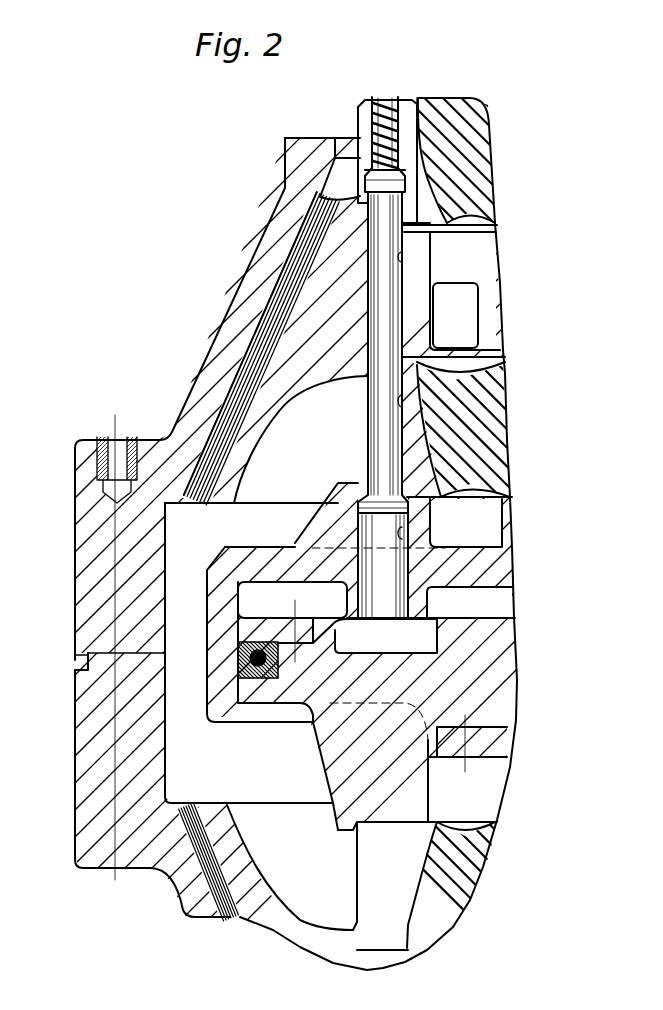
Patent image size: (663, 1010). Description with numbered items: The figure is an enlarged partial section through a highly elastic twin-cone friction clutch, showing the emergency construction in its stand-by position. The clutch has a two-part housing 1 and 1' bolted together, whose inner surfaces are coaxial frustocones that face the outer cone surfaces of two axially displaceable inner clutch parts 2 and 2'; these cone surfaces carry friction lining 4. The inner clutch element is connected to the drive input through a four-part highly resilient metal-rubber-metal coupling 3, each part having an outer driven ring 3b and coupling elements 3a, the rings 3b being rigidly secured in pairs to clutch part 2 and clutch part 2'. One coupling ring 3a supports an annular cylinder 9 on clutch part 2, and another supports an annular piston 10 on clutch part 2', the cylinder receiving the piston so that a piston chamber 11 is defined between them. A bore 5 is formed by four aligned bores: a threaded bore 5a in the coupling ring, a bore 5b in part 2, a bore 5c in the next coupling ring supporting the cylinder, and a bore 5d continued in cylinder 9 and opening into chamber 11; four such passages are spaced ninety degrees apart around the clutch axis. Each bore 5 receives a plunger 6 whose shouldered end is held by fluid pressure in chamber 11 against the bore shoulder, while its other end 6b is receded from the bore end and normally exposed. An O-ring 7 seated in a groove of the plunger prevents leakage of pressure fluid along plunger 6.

The housing part 1 is at (199, 512).
The housing part 1' is at (107, 804).
The clutch part 2 is at (259, 348).
The clutch part 2' is at (215, 898).
The metal-rubber-metal coupling 3 is at (440, 98).
The coupling element 3a is at (423, 200).
The outer driven ring 3b is at (463, 181).
The friction lining 4 is at (308, 227).
The bore 5 is at (404, 323).
The bore 5a is at (376, 99).
The bore 5b is at (404, 257).
The bore 5c is at (404, 402).
The bore 5d is at (406, 535).
The plunger 6 is at (388, 318).
The plunger end 6b is at (402, 100).
The O-ring 7 is at (340, 493).
The cylinder 9 is at (223, 627).
The piston 10 is at (463, 680).
The piston chamber 11 is at (250, 597).